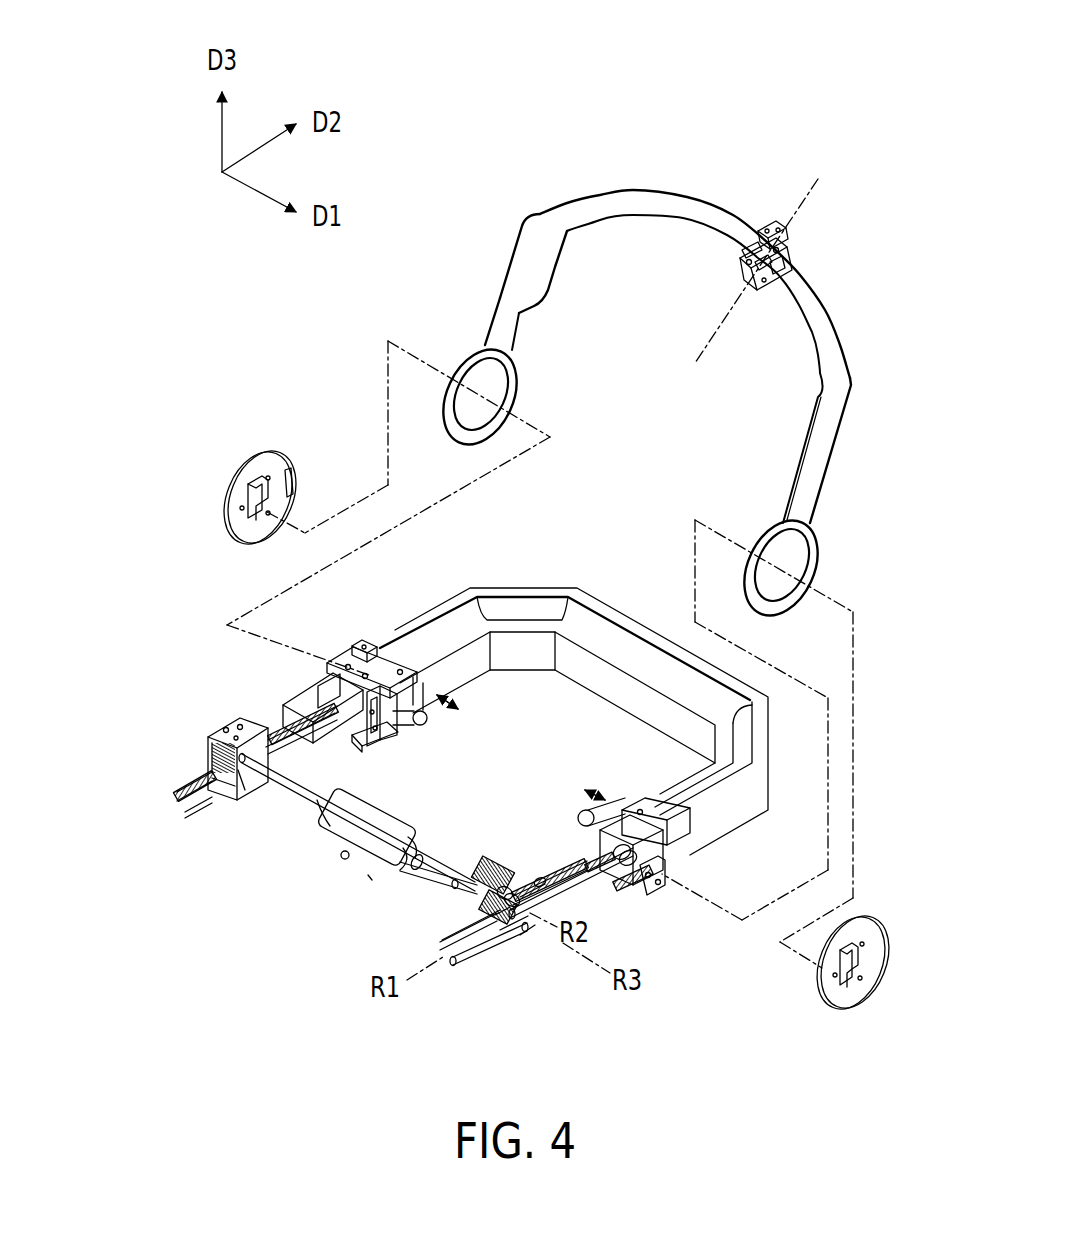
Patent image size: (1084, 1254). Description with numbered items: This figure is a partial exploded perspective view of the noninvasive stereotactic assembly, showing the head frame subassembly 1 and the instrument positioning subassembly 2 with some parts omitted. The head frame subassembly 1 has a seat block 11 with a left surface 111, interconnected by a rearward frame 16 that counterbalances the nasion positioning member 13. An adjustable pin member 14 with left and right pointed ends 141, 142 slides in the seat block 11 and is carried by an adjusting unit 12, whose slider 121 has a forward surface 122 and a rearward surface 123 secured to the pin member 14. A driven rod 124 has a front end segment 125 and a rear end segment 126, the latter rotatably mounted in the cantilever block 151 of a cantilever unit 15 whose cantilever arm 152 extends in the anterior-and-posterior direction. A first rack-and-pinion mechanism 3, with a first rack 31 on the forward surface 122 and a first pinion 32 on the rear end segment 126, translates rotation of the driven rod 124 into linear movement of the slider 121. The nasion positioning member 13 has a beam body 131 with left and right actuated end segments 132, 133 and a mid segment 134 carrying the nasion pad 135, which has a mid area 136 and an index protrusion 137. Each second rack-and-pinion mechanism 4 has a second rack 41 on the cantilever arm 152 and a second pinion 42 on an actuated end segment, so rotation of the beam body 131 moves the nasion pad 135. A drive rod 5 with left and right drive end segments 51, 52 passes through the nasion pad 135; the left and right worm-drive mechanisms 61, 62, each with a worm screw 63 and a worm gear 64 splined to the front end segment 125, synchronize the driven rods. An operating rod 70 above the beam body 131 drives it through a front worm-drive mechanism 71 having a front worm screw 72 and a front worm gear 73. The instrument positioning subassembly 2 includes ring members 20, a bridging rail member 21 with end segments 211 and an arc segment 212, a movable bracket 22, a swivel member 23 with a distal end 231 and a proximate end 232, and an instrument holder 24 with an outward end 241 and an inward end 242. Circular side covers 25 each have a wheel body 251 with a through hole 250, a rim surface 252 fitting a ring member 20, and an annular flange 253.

The head frame subassembly 1 is at (602, 813).
The instrument positioning subassembly 2 is at (658, 336).
The first rack-and-pinion mechanism 3 is at (677, 944).
The second rack-and-pinion mechanism 4 is at (180, 690).
The drive rod 5 is at (300, 797).
The seat block 11 is at (602, 731).
The left surface 111 is at (425, 692).
The adjusting unit 12 is at (416, 870).
The slider 121 is at (672, 892).
The forward surface 122 is at (640, 890).
The rearward surface 123 is at (660, 862).
The driven rod 124 is at (600, 940).
The front end segment 125 is at (458, 965).
The rear end segment 126 is at (595, 858).
The nasion positioning member 13 is at (416, 843).
The beam body 131 is at (292, 768).
The left actuated end segment 132 is at (430, 860).
The right actuated end segment 133 is at (228, 735).
The mid segment 134 is at (412, 840).
The nasion pad 135 is at (338, 856).
The mid area 136 is at (370, 810).
The index protrusion 137 is at (368, 877).
The adjustable pin member 14 is at (518, 760).
The left pointed end 141 is at (588, 808).
The right pointed end 142 is at (440, 733).
The cantilever unit 15 is at (350, 660).
The cantilever block 151 is at (305, 700).
The cantilever arm 152 is at (190, 800).
The rearward frame 16 is at (602, 694).
The ring member 20 is at (465, 361).
The bridging rail member 21 is at (658, 442).
The end segment 211 is at (503, 310).
The arc segment 212 is at (600, 196).
The movable bracket 22 is at (779, 272).
The swivel member 23 is at (819, 249).
The distal end 231 is at (790, 270).
The proximate end 232 is at (788, 264).
The instrument holder 24 is at (760, 197).
The outward end 241 is at (770, 225).
The inward end 242 is at (740, 257).
The circular side cover 25 is at (522, 743).
The through hole 250 is at (248, 492).
The wheel body 251 is at (282, 460).
The rim surface 252 is at (250, 470).
The annular flange 253 is at (257, 452).
The first rack 31 is at (662, 880).
The first pinion 32 is at (628, 866).
The second rack 41 is at (470, 935).
The second pinion 42 is at (507, 890).
The left drive end segment 51 is at (520, 932).
The right drive end segment 52 is at (243, 770).
The left worm-drive mechanism 61 is at (480, 960).
The right worm-drive mechanism 62 is at (222, 805).
The worm screw 63 is at (490, 915).
The worm gear 64 is at (500, 925).
The operating rod 70 is at (480, 862).
The front worm-drive mechanism 71 is at (510, 885).
The front worm screw 72 is at (485, 865).
The front worm gear 73 is at (482, 905).